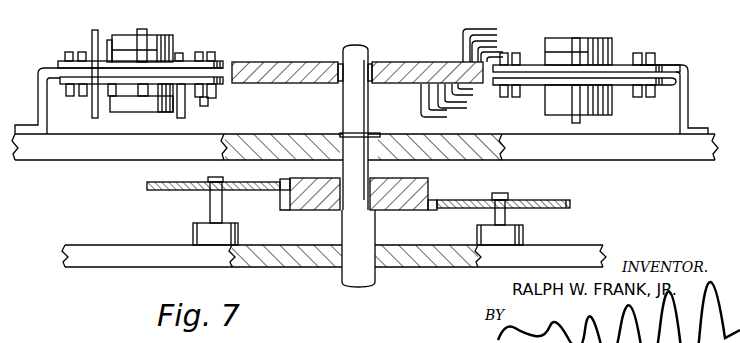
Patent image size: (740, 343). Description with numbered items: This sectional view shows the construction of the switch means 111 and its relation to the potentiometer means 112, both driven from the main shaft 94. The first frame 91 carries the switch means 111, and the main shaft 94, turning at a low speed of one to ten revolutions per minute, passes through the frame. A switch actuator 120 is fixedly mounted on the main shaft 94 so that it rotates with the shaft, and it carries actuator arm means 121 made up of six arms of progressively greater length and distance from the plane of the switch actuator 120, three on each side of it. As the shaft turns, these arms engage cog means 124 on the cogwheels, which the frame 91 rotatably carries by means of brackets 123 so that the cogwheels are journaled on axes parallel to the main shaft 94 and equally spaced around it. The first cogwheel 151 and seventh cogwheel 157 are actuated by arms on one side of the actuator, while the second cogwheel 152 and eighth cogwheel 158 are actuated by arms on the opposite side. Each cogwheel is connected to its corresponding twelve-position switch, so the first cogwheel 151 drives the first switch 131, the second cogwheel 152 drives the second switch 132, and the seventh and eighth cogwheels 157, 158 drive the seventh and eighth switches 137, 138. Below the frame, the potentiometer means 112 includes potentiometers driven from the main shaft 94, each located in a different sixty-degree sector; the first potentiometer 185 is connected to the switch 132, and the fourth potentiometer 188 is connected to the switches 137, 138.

The first frame 91 is at (305, 142).
The main shaft 94 is at (354, 113).
The switch means 111 is at (430, 64).
The potentiometer means 112 is at (432, 212).
The switch actuator 120 is at (303, 62).
The actuator arm means 121 is at (497, 32).
The brackets 123 is at (47, 104).
The cog means 124 is at (70, 52).
The first switch 131 is at (585, 38).
The second switch 132 is at (597, 114).
The seventh switch 137 is at (154, 35).
The eighth switch 138 is at (153, 112).
The first cogwheel 151 is at (660, 62).
The second cogwheel 152 is at (660, 87).
The seventh cogwheel 157 is at (221, 60).
The eighth cogwheel 158 is at (217, 99).
The first potentiometer 185 is at (520, 235).
The fourth potentiometer 188 is at (193, 226).